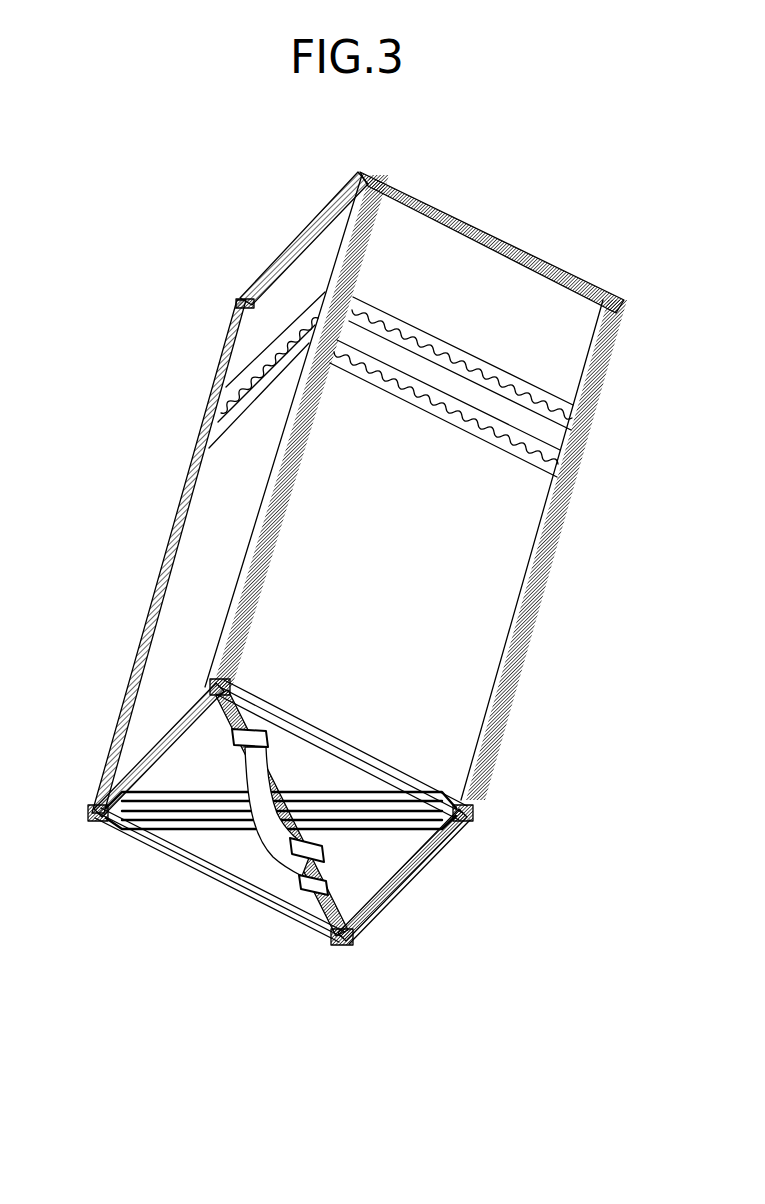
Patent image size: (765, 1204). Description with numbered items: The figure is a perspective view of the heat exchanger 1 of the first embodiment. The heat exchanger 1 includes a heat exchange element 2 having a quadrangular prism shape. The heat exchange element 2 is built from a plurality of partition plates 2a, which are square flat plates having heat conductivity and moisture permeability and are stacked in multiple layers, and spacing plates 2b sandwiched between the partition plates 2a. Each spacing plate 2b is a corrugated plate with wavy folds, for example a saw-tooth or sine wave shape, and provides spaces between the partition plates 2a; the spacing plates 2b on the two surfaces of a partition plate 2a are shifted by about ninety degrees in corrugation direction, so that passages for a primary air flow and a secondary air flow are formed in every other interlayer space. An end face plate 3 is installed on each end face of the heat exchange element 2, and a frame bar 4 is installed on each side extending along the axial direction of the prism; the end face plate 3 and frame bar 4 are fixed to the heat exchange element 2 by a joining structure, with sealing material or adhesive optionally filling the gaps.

The heat exchanger 1 is at (163, 226).
The heat exchange element 2 is at (488, 536).
The partition plate 2a is at (440, 397).
The spacing plate 2b is at (503, 430).
The end face plate 3 is at (507, 243).
The frame bar 4 is at (288, 440).